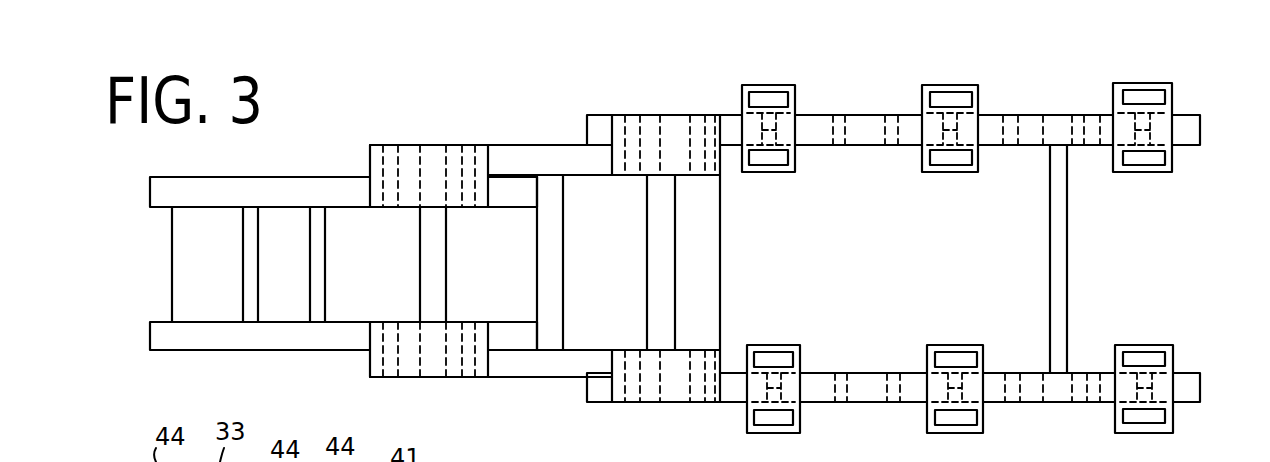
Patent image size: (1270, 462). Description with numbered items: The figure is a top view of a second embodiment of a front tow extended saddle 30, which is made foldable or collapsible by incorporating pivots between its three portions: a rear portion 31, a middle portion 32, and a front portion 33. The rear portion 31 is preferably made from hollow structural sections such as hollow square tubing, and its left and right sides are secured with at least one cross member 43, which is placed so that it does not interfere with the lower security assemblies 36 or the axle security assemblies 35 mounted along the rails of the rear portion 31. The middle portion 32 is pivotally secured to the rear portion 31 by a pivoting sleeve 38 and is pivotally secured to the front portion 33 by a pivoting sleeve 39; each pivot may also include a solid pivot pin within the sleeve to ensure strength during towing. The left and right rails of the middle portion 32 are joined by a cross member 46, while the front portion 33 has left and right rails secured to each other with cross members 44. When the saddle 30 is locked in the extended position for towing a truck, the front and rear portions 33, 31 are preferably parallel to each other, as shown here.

The front tow extended saddle 30 is at (202, 160).
The rear portion 31 is at (1047, 100).
The middle portion 32 is at (518, 122).
The front portion 33 is at (312, 172).
The axle security assemblies 35 is at (947, 172).
The lower security assemblies 36 is at (778, 172).
The pivoting sleeve 38 is at (675, 258).
The pivoting sleeve 39 is at (446, 243).
The cross member 43 is at (1067, 262).
The cross members 44 is at (353, 253).
The cross member 46 is at (563, 252).